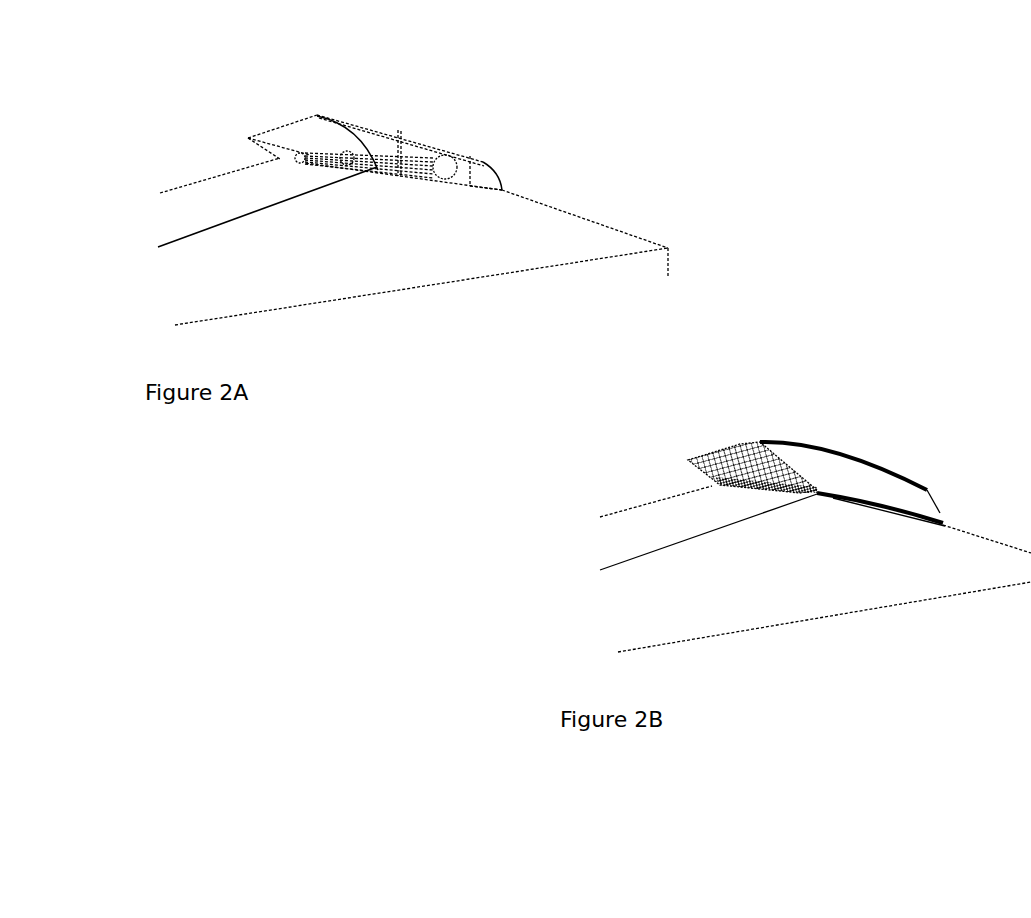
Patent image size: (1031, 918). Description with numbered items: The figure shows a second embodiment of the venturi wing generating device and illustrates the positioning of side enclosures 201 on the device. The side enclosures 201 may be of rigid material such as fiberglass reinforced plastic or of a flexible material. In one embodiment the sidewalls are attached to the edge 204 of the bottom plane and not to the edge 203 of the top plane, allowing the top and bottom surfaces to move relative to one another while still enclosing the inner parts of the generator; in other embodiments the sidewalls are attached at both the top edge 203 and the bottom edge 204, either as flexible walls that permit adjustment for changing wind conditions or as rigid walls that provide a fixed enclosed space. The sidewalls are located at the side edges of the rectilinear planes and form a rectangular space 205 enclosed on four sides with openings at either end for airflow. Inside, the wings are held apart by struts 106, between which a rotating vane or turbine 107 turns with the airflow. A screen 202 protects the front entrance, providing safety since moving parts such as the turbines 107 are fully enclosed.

In FIG. 2A, the side enclosures 201 is at (368, 139).
In FIG. 2A, the struts 106 is at (468, 165).
In FIG. 2A, the rotating vane or turbine 107 is at (427, 175).
In FIG. 2B, the screen 202 is at (693, 458).
In FIG. 2B, the edge of the top plane 203 is at (853, 448).
In FIG. 2B, the edge of the bottom plane 204 is at (870, 503).
In FIG. 2B, the rectangular space 205 is at (760, 470).